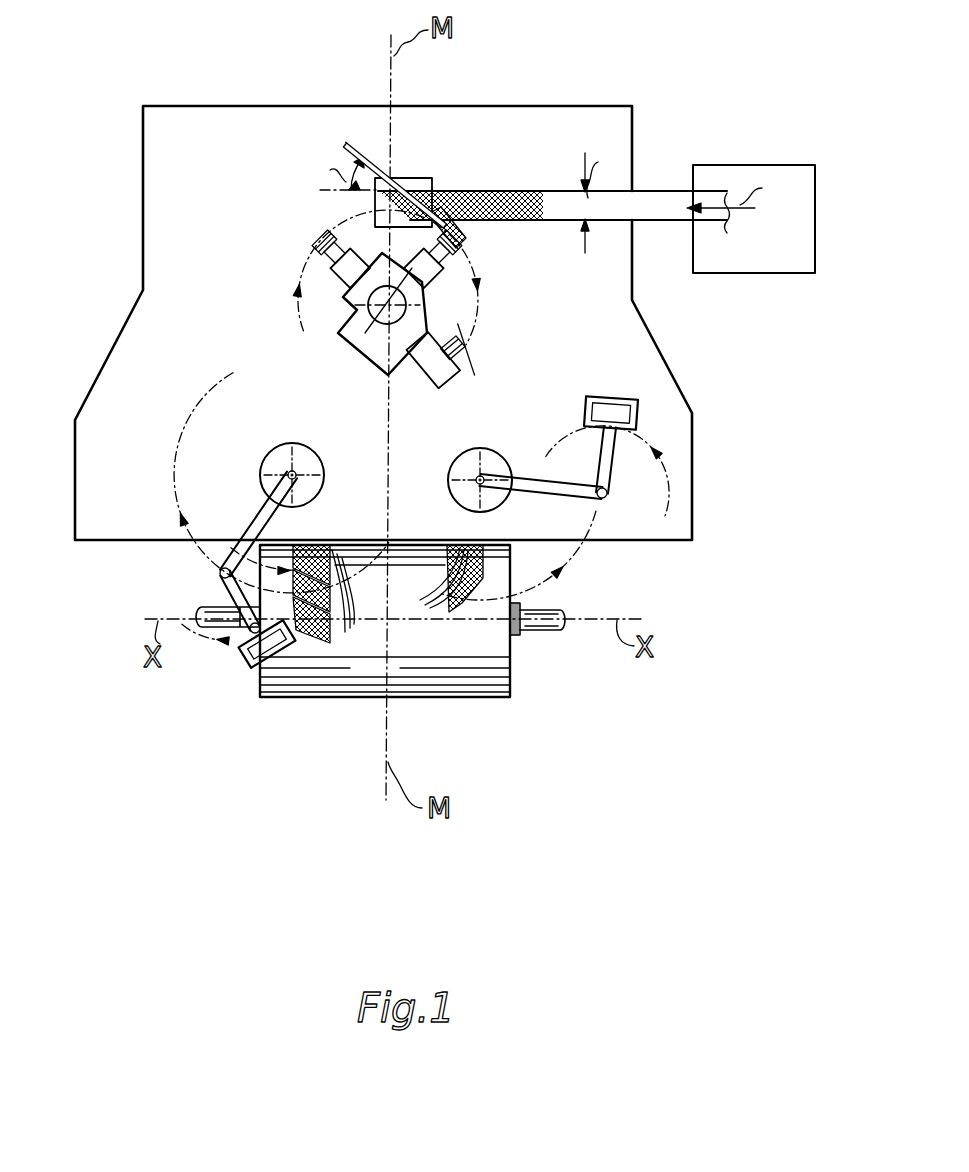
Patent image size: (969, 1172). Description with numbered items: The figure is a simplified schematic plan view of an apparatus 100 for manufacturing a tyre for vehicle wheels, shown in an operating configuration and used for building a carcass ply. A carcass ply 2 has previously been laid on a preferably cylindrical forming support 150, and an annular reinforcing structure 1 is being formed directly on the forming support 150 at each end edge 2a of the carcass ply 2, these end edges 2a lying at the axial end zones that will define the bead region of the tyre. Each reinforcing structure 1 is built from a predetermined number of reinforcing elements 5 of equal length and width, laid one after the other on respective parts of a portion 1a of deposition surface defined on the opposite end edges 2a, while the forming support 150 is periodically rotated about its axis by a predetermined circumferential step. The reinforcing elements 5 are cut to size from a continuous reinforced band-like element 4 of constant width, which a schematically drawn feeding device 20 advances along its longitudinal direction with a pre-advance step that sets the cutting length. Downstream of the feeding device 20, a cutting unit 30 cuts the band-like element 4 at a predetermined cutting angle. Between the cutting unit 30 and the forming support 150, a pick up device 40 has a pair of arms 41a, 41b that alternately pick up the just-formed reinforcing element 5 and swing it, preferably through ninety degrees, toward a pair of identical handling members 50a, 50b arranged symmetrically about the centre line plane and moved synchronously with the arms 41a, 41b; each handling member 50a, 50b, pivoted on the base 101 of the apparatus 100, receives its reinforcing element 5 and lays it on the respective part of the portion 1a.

The annular reinforcing structure 1 is at (275, 573).
The portion of deposition surface 1a is at (311, 650).
The carcass ply 2 is at (417, 673).
The end edge 2a is at (289, 703).
The continuous reinforced band-like element 4 is at (655, 206).
The reinforcing element 5 is at (462, 226).
The feeding device 20 is at (745, 250).
The cutting unit 30 is at (395, 168).
The pick up device 40 is at (352, 361).
The arm 41a is at (440, 263).
The arm 41b is at (334, 260).
The handling member 50a is at (630, 476).
The handling member 50b is at (248, 508).
The apparatus for manufacturing a tyre 100 is at (712, 593).
The base 101 is at (535, 132).
The forming support 150 is at (413, 661).